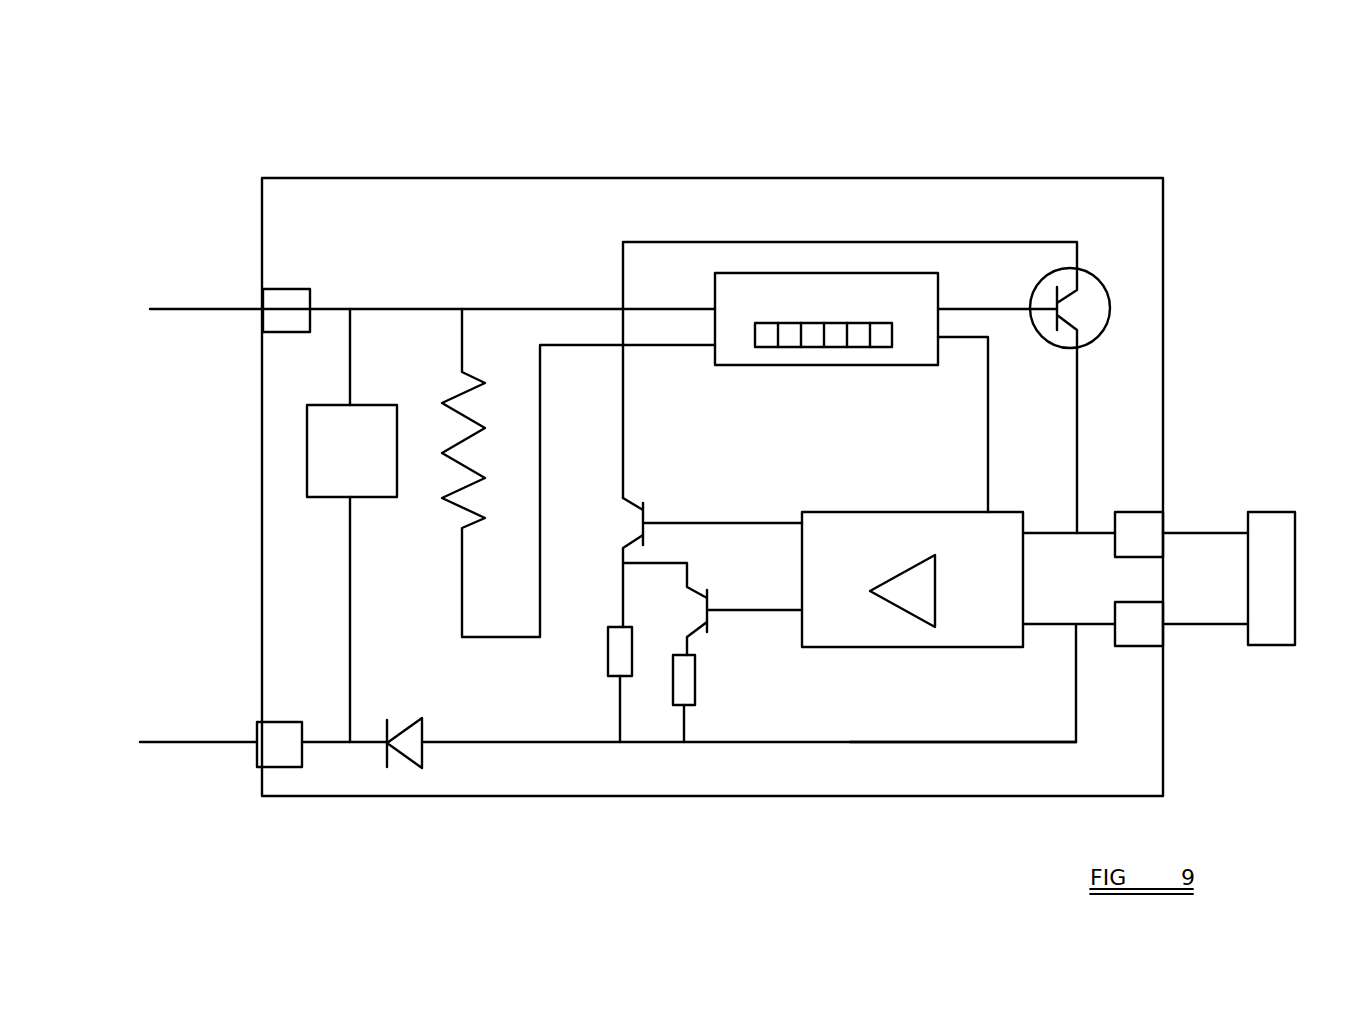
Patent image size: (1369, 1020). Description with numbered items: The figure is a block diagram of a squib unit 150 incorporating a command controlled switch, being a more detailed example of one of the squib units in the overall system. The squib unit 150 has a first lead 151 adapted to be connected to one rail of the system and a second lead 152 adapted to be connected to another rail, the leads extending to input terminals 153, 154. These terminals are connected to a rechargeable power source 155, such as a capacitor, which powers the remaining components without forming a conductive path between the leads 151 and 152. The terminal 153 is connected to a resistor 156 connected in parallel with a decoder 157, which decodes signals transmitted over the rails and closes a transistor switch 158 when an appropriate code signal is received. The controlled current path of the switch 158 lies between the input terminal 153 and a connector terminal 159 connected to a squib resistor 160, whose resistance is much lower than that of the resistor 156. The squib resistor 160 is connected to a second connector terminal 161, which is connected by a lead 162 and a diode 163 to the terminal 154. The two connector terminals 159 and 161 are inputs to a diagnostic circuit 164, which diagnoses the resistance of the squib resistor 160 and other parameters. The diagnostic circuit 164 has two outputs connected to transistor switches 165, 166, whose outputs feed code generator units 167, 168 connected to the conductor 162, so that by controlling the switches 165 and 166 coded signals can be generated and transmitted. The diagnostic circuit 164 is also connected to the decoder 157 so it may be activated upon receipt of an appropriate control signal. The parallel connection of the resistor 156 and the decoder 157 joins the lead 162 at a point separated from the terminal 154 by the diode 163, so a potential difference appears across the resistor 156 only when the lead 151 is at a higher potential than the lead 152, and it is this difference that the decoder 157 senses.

The squib unit 150 is at (996, 166).
The first lead 151 is at (210, 308).
The second lead 152 is at (228, 740).
The input terminal 153 is at (298, 297).
The input terminal 154 is at (268, 762).
The rechargeable power source 155 is at (330, 472).
The resistor 156 is at (444, 404).
The decoder 157 is at (773, 273).
The transistor switch 158 is at (1092, 305).
The connector terminal 159 is at (1150, 526).
The squib resistor 160 is at (1283, 547).
The second connector terminal 161 is at (1150, 630).
The lead 162 is at (912, 742).
The diode 163 is at (417, 762).
The diagnostic circuit 164 is at (851, 625).
The transistor switch 165 is at (712, 628).
The transistor switch 166 is at (622, 535).
The code generator unit 167 is at (697, 690).
The code generator unit 168 is at (632, 678).